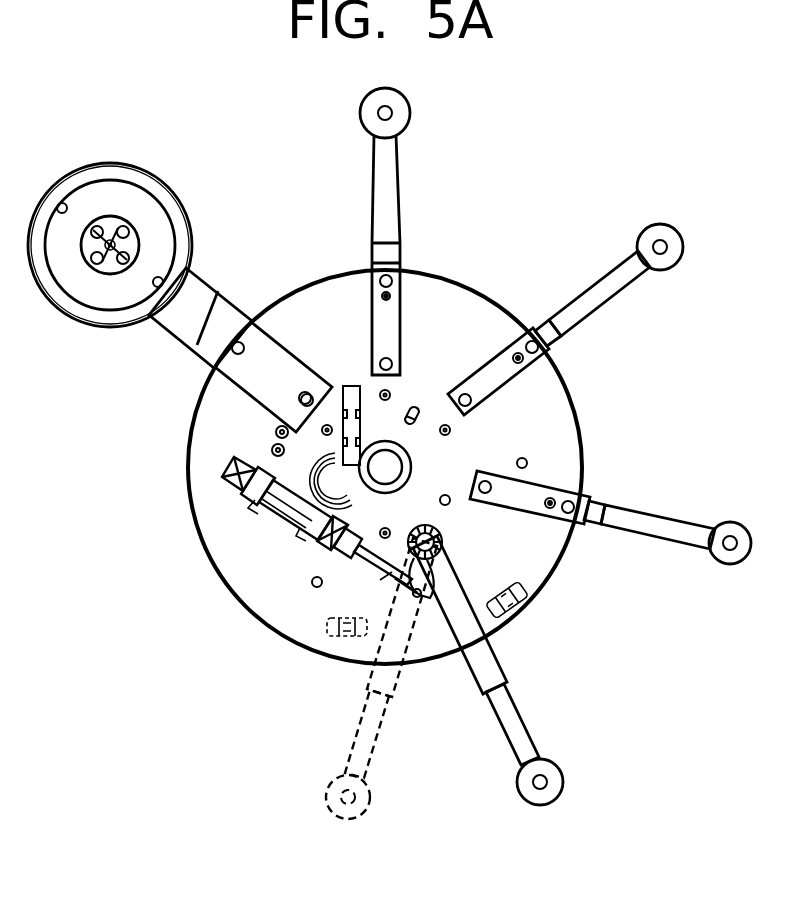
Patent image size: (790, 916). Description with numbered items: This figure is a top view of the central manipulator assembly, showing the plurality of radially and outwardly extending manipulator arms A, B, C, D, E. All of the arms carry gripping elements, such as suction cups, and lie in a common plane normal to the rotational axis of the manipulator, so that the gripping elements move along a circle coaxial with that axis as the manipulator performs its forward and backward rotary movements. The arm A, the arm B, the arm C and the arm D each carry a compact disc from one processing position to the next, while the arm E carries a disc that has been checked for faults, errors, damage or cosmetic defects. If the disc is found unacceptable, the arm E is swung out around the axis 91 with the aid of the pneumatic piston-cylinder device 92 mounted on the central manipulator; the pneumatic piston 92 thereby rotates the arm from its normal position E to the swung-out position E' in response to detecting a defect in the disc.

The manipulator arm A is at (205, 302).
The manipulator arm B is at (387, 192).
The manipulator arm C is at (607, 300).
The manipulator arm D is at (642, 517).
The manipulator arm E is at (488, 677).
The swung-out position of arm E E' is at (349, 678).
The axis 91 is at (432, 542).
The pneumatic piston-cylinder device 92 is at (283, 505).